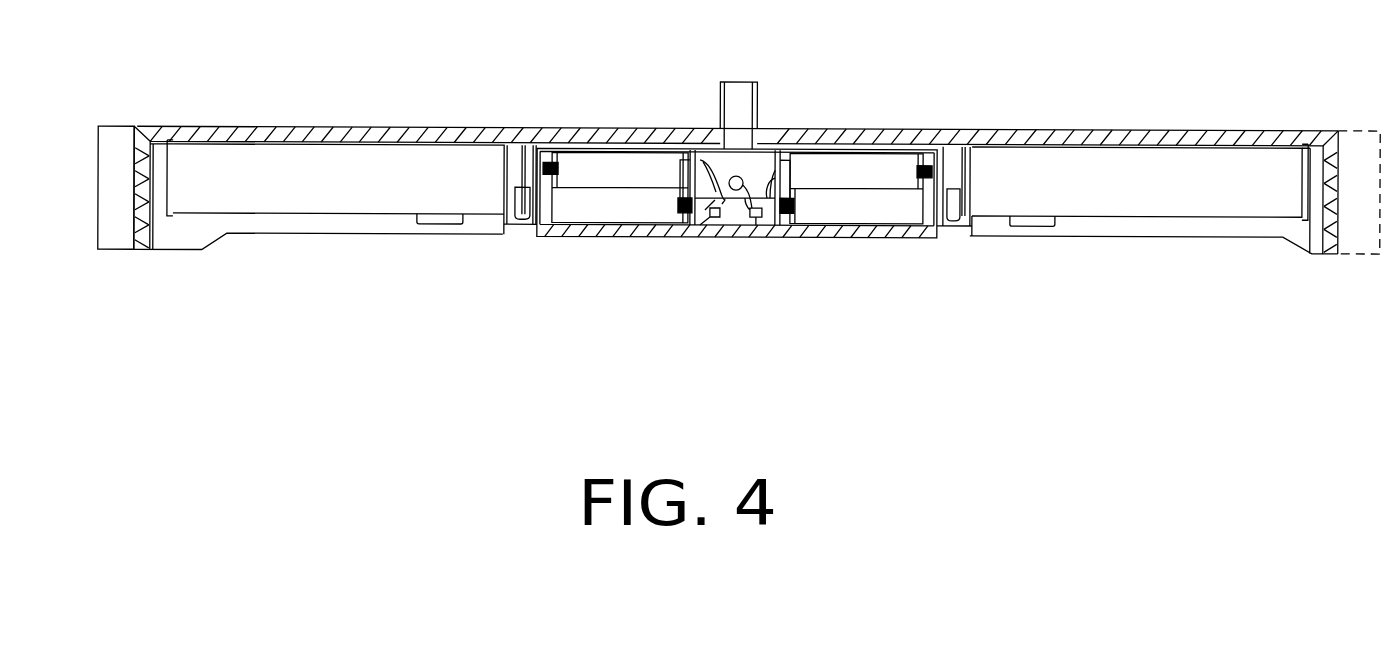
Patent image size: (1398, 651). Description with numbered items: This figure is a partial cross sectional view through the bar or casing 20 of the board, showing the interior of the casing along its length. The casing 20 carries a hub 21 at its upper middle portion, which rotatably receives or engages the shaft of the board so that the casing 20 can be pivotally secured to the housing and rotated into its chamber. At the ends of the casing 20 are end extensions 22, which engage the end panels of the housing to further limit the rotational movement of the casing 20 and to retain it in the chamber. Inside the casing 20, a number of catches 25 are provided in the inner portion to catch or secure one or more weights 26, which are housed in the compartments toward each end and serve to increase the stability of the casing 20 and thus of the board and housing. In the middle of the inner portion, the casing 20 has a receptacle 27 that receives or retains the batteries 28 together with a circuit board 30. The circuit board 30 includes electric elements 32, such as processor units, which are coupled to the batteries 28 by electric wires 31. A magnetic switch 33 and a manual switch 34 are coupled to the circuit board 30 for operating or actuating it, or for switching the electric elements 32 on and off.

The casing 20 is at (1227, 137).
The hub 21 is at (757, 93).
The end extension 22 is at (125, 137).
The catch 25 is at (168, 222).
The weight 26 is at (322, 158).
The receptacle 27 is at (528, 232).
The battery 28 is at (617, 185).
The circuit board 30 is at (745, 225).
The electric wire 31 is at (712, 160).
The electric element 32 is at (753, 237).
The magnetic switch 33 is at (700, 213).
The manual switch 34 is at (758, 225).